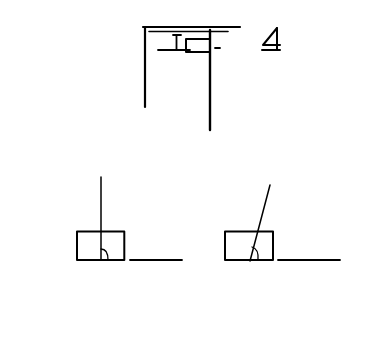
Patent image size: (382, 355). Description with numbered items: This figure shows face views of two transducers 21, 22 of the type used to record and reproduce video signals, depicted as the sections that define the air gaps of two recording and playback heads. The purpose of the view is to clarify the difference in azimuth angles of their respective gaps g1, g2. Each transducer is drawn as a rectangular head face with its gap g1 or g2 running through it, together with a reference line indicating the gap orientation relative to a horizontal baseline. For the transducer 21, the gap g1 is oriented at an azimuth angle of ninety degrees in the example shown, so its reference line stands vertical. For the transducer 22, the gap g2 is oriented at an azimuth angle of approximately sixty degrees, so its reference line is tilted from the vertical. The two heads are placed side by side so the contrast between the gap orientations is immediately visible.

The transducer 21 is at (77, 240).
The transducer 22 is at (225, 240).
The gap g1 is at (106, 261).
The gap g2 is at (253, 262).